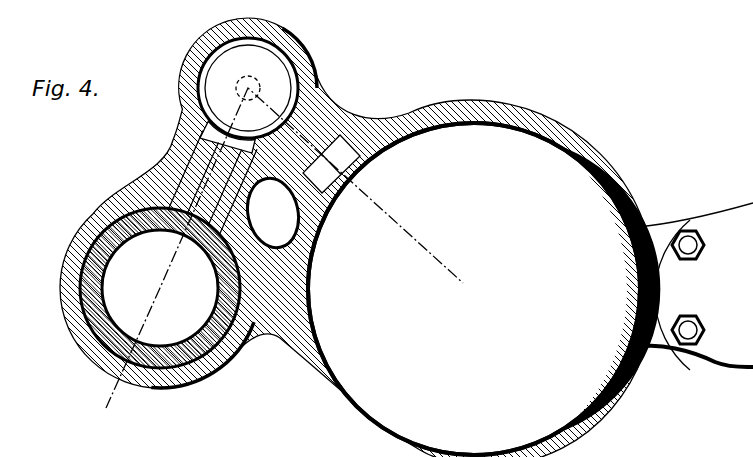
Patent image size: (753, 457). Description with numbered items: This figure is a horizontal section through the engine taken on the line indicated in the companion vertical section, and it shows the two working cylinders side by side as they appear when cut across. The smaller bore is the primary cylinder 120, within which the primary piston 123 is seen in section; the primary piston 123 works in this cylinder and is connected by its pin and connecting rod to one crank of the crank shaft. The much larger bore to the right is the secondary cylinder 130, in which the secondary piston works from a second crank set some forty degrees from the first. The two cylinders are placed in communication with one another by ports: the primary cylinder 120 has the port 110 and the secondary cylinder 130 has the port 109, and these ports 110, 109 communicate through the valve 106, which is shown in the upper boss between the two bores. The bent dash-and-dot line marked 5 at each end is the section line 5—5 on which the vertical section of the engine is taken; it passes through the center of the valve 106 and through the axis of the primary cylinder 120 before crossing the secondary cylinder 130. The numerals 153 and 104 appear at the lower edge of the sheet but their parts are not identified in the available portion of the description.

The section line 5— 5 is at (289, 256).
The valve 106 is at (257, 83).
The port 109 is at (346, 158).
The port 110 is at (200, 119).
The primary cylinder 120 is at (86, 229).
The primary piston 123 is at (111, 277).
The secondary cylinder 130 is at (589, 157).
The member 153 is at (209, 450).
The member 104 is at (320, 450).